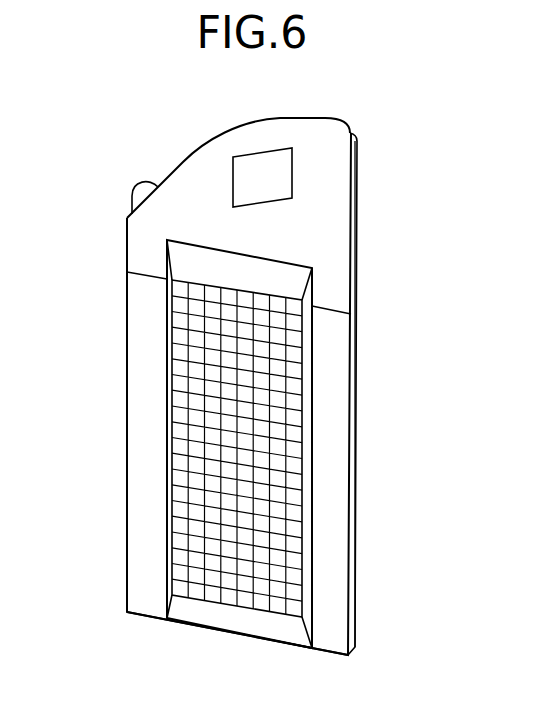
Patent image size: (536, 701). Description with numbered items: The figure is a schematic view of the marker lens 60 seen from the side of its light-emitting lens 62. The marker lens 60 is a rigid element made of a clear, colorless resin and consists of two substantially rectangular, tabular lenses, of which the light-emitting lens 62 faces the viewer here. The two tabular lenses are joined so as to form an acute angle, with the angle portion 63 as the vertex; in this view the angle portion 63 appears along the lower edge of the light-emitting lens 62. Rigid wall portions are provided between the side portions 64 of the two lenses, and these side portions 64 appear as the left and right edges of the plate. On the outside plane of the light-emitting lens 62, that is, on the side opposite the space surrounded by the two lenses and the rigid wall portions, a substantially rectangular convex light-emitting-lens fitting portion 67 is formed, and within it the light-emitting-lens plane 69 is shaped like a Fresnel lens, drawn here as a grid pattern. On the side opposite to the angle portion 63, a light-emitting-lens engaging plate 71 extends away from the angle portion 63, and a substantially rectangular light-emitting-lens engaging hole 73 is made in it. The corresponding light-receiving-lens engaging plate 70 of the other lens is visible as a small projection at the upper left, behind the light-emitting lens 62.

The marker lens 60 is at (179, 129).
The light-emitting lens 62 is at (333, 460).
The angle portion 63 is at (226, 634).
The side portion 64 is at (127, 424).
The light-emitting-lens fitting portion 67 is at (178, 553).
The light-emitting-lens plane 69 is at (244, 440).
The light-receiving-lens engaging plate 70 is at (141, 190).
The light-emitting-lens engaging plate 71 is at (333, 228).
The light-emitting-lens engaging hole 73 is at (287, 173).